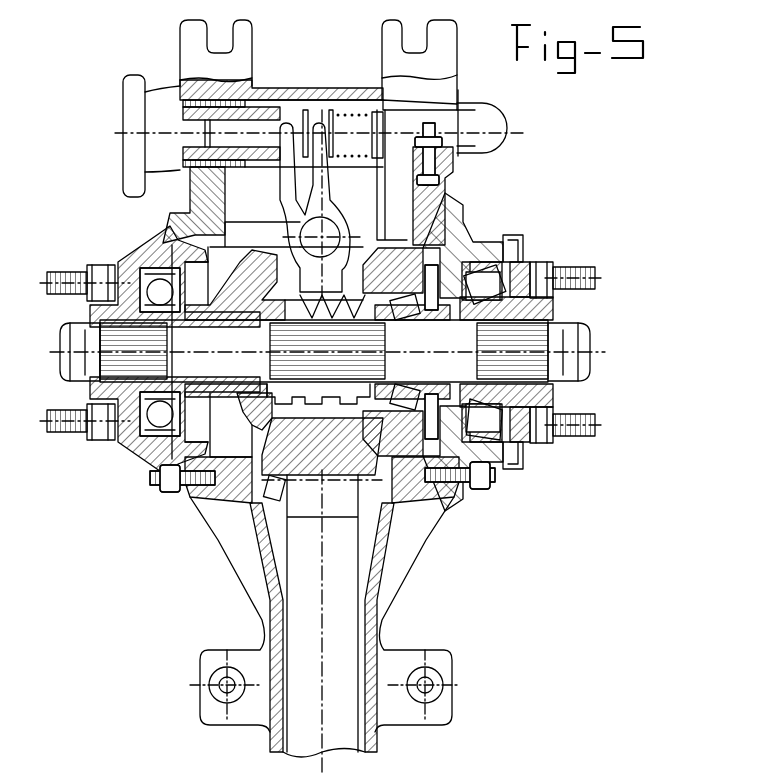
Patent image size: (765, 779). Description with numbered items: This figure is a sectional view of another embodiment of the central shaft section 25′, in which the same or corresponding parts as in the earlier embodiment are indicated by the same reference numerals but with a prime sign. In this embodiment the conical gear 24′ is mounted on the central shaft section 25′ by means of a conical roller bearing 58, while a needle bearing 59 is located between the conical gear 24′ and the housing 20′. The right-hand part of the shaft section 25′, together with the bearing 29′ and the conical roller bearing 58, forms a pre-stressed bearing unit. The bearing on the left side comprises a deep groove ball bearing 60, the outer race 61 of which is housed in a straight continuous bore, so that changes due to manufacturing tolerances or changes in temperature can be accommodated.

The housing 20′ is at (488, 432).
The conical gear 24′ is at (457, 238).
The central shaft section 25′ is at (553, 316).
The bearing 29′ is at (510, 262).
The conical roller bearing 58 is at (385, 282).
The needle bearing 59 is at (478, 268).
The deep groove ball bearing 60 is at (157, 440).
The outer race 61 is at (140, 250).